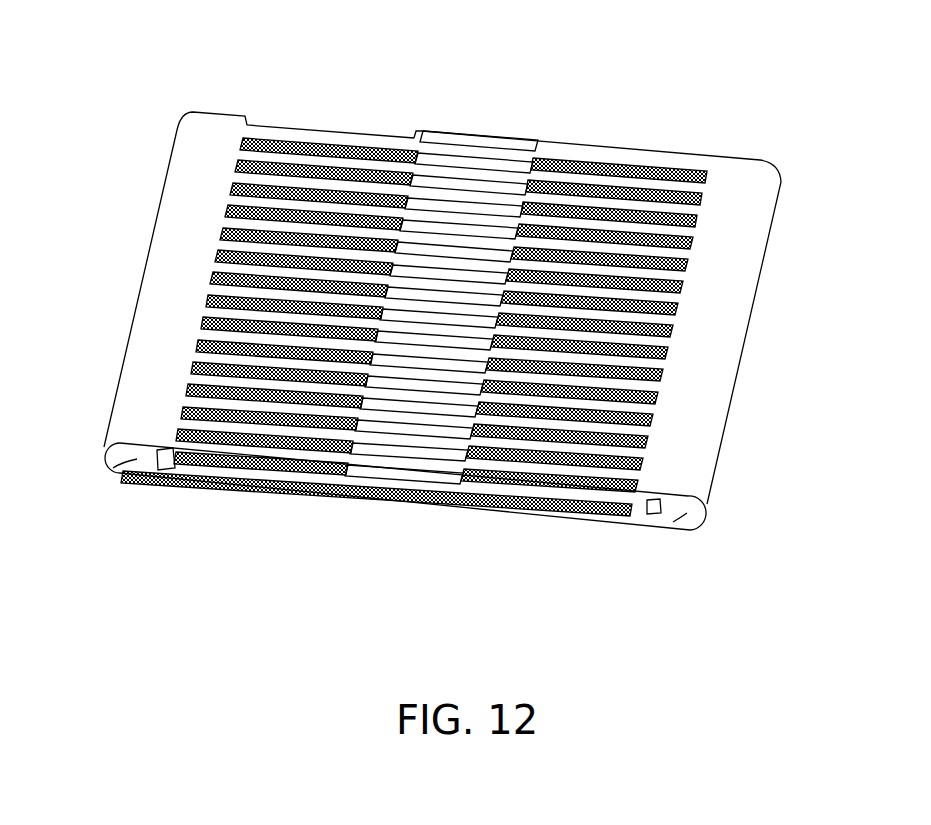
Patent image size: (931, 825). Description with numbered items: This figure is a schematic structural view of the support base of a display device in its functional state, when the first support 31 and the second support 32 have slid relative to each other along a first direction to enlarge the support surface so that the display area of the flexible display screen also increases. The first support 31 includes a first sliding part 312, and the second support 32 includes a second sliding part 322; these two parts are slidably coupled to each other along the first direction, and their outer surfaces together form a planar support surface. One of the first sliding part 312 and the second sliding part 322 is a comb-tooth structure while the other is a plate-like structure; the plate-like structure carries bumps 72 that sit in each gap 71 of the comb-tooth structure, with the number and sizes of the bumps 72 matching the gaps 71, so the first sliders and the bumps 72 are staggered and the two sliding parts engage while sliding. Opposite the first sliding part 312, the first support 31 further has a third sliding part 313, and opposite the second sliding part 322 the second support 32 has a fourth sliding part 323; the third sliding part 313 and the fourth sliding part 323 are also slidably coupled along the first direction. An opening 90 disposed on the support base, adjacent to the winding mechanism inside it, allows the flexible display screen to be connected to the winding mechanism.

The first support 31 is at (137, 462).
The second support 32 is at (688, 513).
The gap 71 is at (265, 138).
The bump 72 is at (622, 152).
The opening 90 is at (168, 476).
The first sliding part 312 is at (328, 139).
The third sliding part 313 is at (258, 480).
The second sliding part 322 is at (550, 487).
The fourth sliding part 323 is at (427, 487).